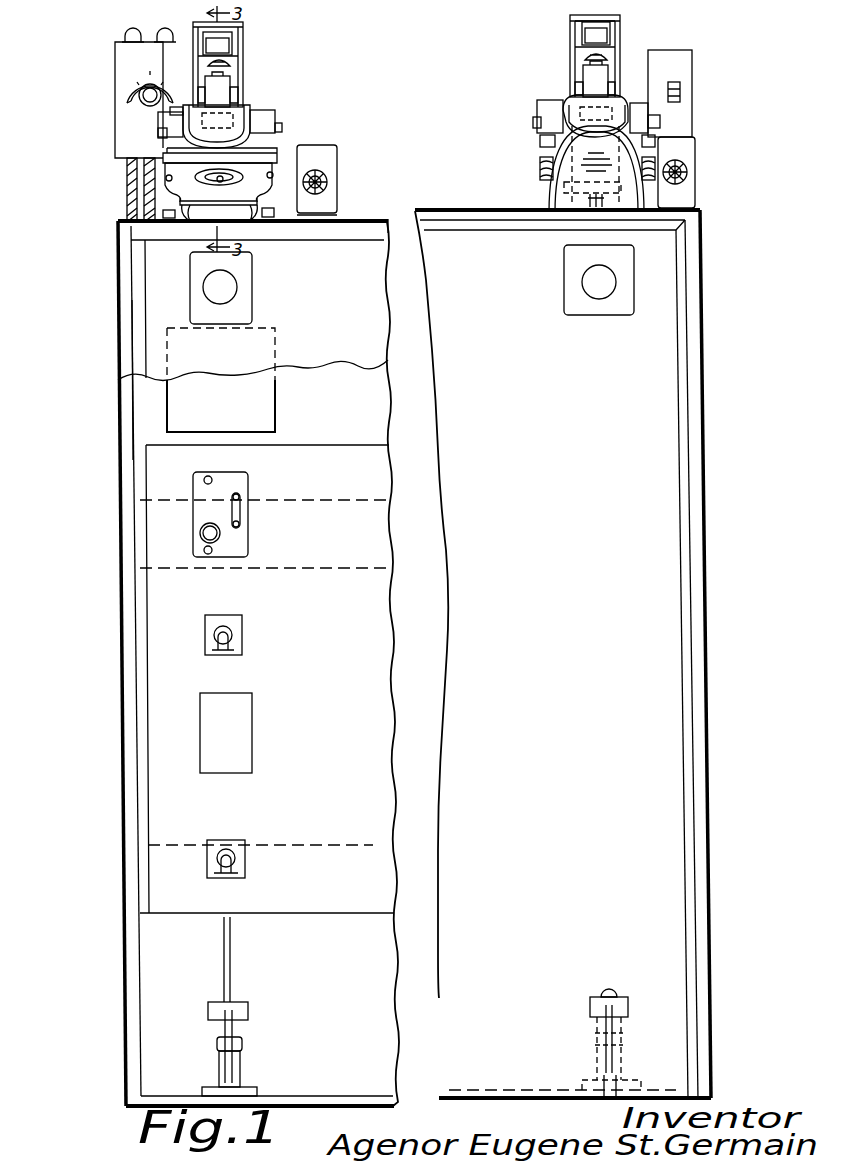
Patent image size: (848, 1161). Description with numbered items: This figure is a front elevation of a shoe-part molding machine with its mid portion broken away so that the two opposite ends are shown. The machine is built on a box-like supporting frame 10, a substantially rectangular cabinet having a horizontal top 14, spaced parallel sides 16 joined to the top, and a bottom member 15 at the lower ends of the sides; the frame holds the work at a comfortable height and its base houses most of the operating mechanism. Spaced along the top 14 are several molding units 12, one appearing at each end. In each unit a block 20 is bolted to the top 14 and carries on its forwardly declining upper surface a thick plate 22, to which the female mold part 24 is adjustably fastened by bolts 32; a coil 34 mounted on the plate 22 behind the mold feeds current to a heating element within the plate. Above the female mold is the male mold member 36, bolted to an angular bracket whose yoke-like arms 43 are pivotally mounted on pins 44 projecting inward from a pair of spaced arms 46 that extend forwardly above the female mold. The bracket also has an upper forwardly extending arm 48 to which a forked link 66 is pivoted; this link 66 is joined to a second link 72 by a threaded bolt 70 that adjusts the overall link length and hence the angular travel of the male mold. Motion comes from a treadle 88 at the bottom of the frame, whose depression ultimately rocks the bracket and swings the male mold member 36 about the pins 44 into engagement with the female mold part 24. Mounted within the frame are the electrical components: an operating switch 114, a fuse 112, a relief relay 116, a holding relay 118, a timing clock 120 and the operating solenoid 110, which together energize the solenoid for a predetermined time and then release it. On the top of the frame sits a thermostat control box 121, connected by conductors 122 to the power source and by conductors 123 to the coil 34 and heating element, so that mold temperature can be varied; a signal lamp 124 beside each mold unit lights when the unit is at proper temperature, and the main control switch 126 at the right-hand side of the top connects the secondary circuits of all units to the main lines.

The box-like supporting frame 10 is at (107, 400).
The molding unit 12 is at (278, 107).
The horizontal top 14 is at (447, 218).
The bottom member 15 is at (270, 1092).
The spaced parallel sides 16 is at (118, 513).
The block 20 is at (190, 203).
The plate 22 is at (308, 200).
The female mold part 24 is at (557, 160).
The bolts 32 is at (163, 177).
The coil 34 is at (220, 181).
The male mold member 36 is at (277, 147).
The yoke-like arms 43 is at (248, 110).
The pins 44 is at (277, 125).
The spaced arms 46 is at (567, 112).
The upper forwardly extending arm 48 is at (233, 100).
The link 66 is at (230, 85).
The threaded bolt 70 is at (240, 53).
The link 72 is at (612, 31).
The treadle 88 is at (240, 1010).
The operating solenoid 110 is at (270, 397).
The fuse 112 is at (248, 485).
The operating switch 114 is at (252, 270).
The relief relay 116 is at (242, 638).
The holding relay 118 is at (245, 865).
The timing clock 120 is at (248, 747).
The thermostat control box 121 is at (118, 110).
The conductors 122 is at (125, 30).
The conductors 123 is at (131, 174).
The signal lamp 124 is at (337, 182).
The main control switch 126 is at (692, 62).